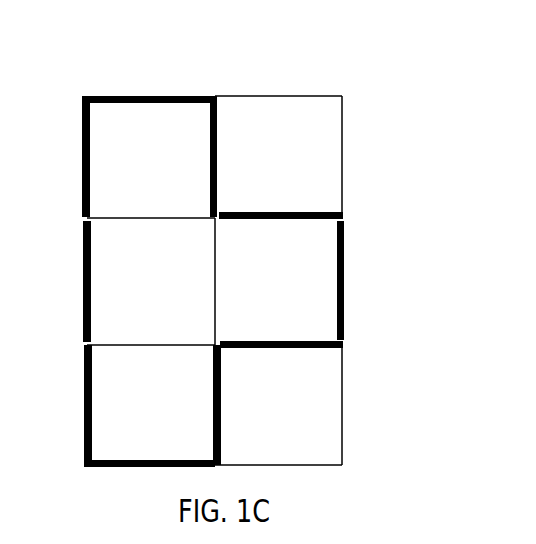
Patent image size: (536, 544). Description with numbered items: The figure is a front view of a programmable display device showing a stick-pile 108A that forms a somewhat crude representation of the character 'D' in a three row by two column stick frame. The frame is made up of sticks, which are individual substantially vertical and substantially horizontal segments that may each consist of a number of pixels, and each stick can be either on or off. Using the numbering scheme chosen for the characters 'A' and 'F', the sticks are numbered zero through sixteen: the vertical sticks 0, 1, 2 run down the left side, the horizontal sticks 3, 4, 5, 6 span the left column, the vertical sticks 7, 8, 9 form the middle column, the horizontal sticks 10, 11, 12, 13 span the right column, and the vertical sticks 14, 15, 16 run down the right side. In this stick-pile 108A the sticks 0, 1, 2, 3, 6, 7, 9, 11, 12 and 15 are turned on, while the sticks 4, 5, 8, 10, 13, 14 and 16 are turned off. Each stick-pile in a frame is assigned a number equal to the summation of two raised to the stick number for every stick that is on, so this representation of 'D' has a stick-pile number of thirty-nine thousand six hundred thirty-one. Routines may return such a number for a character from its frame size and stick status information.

The stick-pile 108A is at (336, 56).
The stick 0 is at (76, 156).
The stick 1 is at (77, 281).
The stick 2 is at (79, 406).
The stick 3 is at (151, 88).
The stick 4 is at (151, 206).
The stick 5 is at (151, 332).
The stick 6 is at (151, 453).
The stick 7 is at (206, 156).
The stick 8 is at (205, 281).
The stick 9 is at (209, 405).
The stick 10 is at (278, 83).
The stick 11 is at (281, 205).
The stick 12 is at (281, 331).
The stick 13 is at (278, 451).
The stick 14 is at (358, 157).
The stick 15 is at (356, 280).
The stick 16 is at (359, 405).